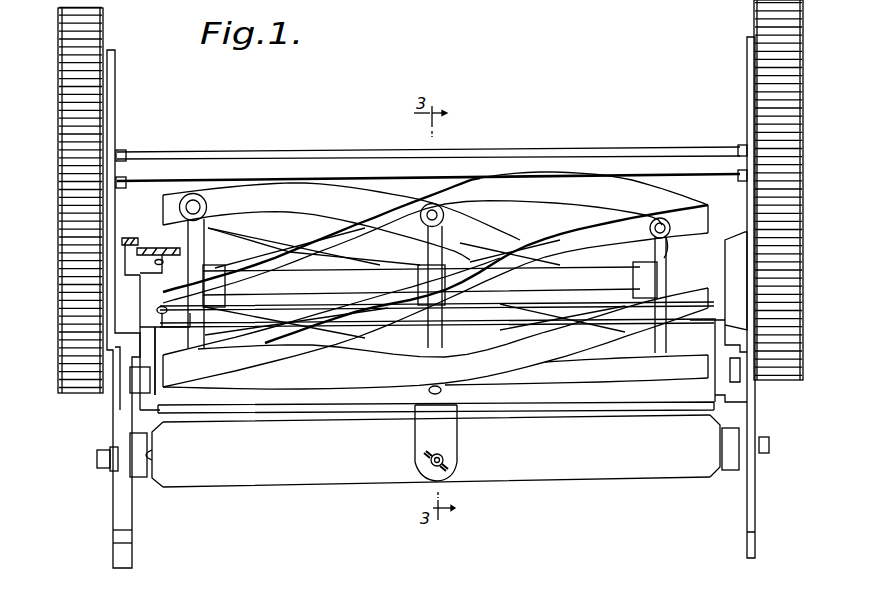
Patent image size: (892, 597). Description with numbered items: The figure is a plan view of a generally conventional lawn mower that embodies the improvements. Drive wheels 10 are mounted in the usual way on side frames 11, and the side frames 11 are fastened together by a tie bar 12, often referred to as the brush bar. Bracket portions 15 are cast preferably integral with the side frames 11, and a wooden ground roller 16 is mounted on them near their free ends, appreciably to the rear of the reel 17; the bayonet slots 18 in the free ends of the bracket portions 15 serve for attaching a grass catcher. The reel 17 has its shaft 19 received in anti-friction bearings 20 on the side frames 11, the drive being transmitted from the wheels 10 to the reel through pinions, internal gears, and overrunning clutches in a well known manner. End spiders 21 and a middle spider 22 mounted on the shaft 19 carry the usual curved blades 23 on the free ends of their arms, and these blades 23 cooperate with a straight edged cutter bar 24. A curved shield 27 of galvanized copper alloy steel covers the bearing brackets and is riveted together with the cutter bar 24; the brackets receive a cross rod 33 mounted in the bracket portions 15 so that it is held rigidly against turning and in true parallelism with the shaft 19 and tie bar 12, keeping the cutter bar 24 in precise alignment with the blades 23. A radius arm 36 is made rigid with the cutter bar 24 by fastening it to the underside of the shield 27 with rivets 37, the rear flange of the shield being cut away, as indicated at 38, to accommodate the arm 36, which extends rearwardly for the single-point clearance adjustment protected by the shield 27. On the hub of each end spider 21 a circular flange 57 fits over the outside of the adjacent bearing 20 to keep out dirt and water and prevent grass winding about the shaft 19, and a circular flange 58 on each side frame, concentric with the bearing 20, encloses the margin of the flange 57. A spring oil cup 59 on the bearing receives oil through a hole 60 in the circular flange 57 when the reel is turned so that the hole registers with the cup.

The drive wheels 10 is at (755, 8).
The side frames 11 is at (750, 97).
The tie bar 12 is at (570, 158).
The bracket portions 15 is at (756, 407).
The ground roller 16 is at (612, 472).
The reel 17 is at (325, 192).
The bayonet slots 18 is at (756, 529).
The shaft 19 is at (600, 274).
The anti-friction bearings 20 is at (144, 239).
The end spiders 21 is at (204, 245).
The middle spider 22 is at (434, 251).
The curved blades 23 is at (530, 243).
The cutter bar 24 is at (525, 313).
The shield 27 is at (567, 395).
The cross rod 33 is at (721, 384).
The radius arm 36 is at (458, 432).
The rivets 37 is at (427, 390).
The cut-away 38 is at (460, 403).
The circular flange 57 is at (150, 248).
The circular flange 58 is at (128, 240).
The spring oil cup 59 is at (140, 280).
The hole 60 is at (164, 318).